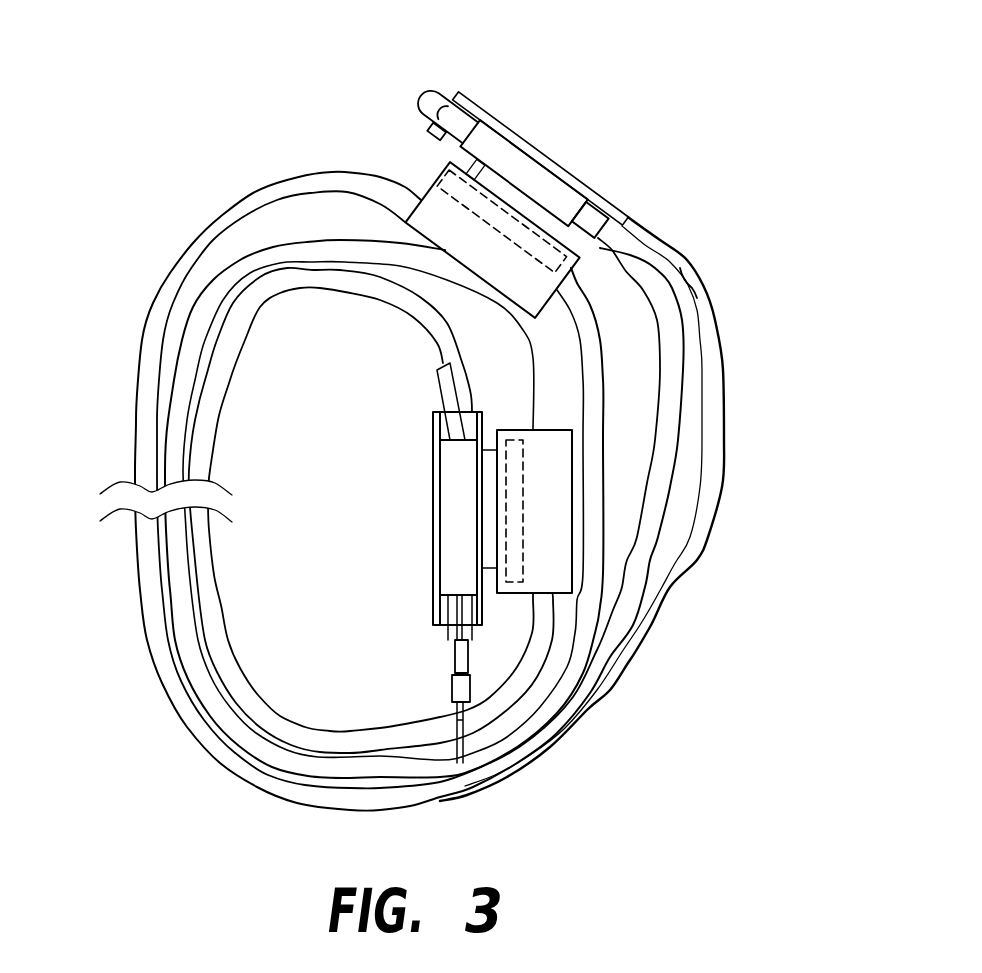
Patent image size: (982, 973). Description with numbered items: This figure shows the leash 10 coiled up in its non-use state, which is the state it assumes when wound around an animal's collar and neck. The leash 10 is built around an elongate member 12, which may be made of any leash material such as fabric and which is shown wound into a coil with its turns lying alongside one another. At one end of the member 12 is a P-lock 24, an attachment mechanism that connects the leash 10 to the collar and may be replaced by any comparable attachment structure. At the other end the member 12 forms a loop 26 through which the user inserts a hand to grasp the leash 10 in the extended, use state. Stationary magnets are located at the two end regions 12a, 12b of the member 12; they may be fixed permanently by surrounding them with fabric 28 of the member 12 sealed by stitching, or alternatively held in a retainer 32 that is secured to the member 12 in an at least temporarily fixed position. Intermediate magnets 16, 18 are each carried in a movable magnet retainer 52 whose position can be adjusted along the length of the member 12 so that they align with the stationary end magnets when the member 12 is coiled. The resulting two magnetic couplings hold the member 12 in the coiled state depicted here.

The leash 10 is at (188, 108).
The elongate member 12 is at (163, 290).
The end region 12a is at (450, 648).
The end region 12b is at (418, 94).
The magnet 16 is at (523, 500).
The magnet 18 is at (558, 192).
The P-lock 24 is at (467, 747).
The loop 26 is at (697, 547).
The fabric 28 is at (683, 280).
The retainer 32 is at (512, 125).
The movable magnet retainer 52 is at (425, 173).